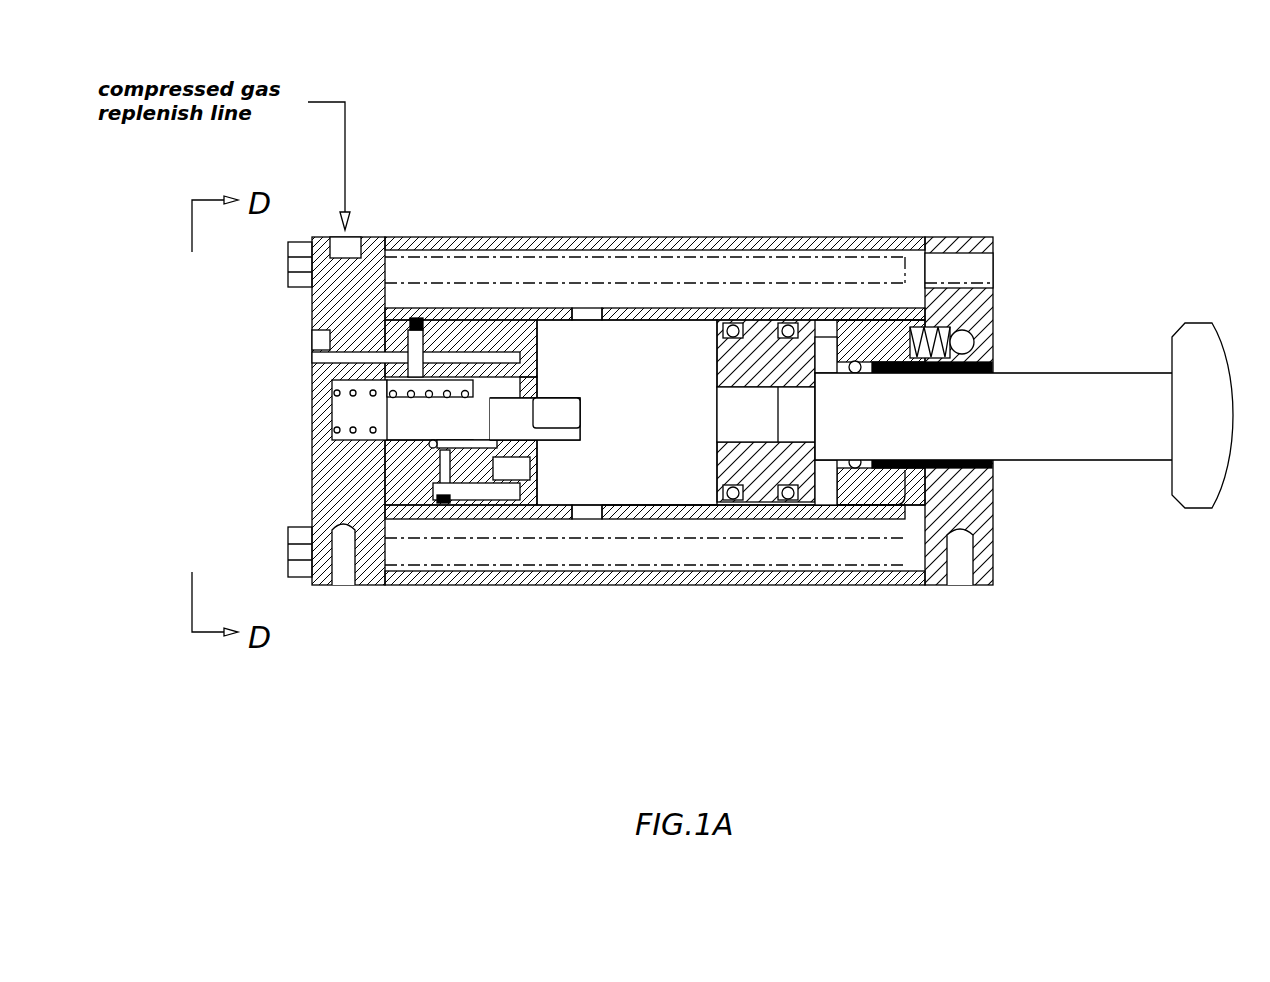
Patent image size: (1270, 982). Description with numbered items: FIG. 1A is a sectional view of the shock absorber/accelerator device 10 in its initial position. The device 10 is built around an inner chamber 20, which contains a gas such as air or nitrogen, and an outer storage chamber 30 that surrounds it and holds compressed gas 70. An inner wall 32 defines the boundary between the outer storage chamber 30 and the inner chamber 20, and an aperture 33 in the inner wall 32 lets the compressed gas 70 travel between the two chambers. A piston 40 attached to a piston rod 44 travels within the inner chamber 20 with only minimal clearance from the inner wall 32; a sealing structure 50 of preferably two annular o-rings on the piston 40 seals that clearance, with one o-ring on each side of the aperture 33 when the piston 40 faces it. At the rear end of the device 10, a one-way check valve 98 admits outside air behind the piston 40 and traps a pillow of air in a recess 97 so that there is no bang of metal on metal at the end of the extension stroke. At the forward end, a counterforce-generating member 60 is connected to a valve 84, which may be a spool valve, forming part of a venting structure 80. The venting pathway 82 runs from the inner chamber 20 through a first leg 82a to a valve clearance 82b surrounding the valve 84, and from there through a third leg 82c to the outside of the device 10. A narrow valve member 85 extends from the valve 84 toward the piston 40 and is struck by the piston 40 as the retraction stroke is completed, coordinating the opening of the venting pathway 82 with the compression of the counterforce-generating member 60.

The shock absorber/accelerator device 10 is at (1005, 230).
The inner chamber 20 is at (667, 387).
The outer storage chamber 30 is at (577, 267).
The inner wall 32 is at (700, 505).
The aperture 33 is at (582, 520).
The piston 40 is at (757, 350).
The piston rod 44 is at (1068, 462).
The sealing structure 50 is at (738, 500).
The counterforce-generating member 60 is at (345, 420).
The gas 70 is at (498, 273).
The venting structure 80 is at (392, 440).
The venting pathway 82 is at (330, 372).
The first leg 82a is at (490, 505).
The valve clearance 82b is at (437, 300).
The third leg 82c is at (370, 355).
The valve 84 is at (420, 440).
The narrow valve member 85 is at (556, 440).
The recess 97 is at (833, 480).
The check valve 98 is at (997, 330).